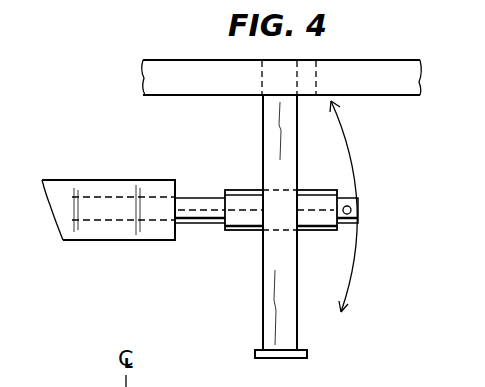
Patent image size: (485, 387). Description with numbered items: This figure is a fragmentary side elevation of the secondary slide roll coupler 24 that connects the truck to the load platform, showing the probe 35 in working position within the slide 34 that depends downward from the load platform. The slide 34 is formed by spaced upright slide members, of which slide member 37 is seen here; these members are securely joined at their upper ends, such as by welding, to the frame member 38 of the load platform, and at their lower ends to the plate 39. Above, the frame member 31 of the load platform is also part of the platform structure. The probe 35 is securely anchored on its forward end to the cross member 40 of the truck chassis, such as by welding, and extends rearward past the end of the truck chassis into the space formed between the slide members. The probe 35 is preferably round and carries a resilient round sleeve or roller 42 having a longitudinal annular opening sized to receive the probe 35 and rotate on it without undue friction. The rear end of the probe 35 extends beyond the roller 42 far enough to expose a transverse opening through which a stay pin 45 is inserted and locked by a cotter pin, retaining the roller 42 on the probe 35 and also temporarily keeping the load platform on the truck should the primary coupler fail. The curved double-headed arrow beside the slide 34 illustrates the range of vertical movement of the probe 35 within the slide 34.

The frame member 31 is at (357, 60).
The frame member 38 is at (278, 80).
The secondary slide roll coupler 24 is at (264, 172).
The slide 34 is at (263, 310).
The plate 39 is at (285, 358).
The cross member 40 is at (76, 158).
The probe 35 is at (208, 223).
The resilient round sleeve or roller 42 is at (331, 231).
The stay pin 45 is at (357, 211).
The slide member 37 is at (298, 325).